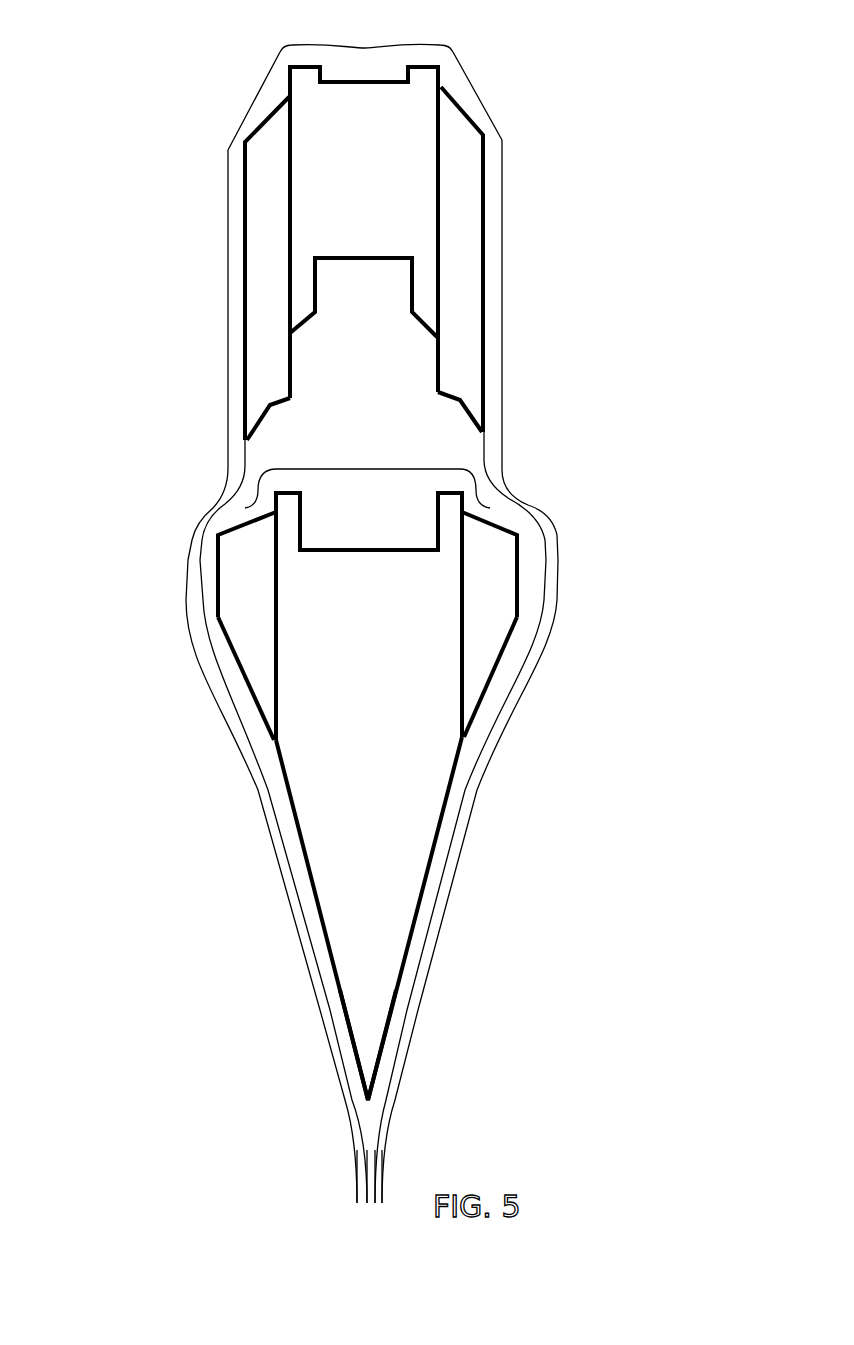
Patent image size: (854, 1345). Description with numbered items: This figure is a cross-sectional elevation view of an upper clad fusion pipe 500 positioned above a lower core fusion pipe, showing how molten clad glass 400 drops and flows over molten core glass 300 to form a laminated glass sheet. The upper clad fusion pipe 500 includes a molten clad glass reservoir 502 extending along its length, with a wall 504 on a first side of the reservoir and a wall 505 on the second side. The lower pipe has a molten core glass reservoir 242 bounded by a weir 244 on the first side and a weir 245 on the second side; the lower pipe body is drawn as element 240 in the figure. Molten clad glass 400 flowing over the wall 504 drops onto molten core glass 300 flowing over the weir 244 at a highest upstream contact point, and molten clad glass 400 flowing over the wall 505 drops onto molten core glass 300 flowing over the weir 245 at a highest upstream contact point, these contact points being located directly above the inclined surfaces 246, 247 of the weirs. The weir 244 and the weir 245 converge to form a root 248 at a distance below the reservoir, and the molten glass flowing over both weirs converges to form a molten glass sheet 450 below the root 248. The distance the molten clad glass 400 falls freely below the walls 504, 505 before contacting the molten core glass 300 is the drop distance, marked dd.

The upper clad fusion pipe 500 is at (337, 197).
The molten clad glass reservoir 502 is at (373, 85).
The wall 504 is at (486, 183).
The wall 505 is at (247, 235).
The molten clad glass 400 is at (492, 250).
The lower module 240 is at (337, 862).
The molten core glass reservoir 242 is at (372, 553).
The weir 244 is at (503, 586).
The weir 245 is at (233, 588).
The inclined surface 246 is at (556, 513).
The inclined surface 247 is at (228, 522).
The root 248 is at (367, 1099).
The molten core glass 300 is at (481, 792).
The molten glass sheet 450 is at (370, 1182).